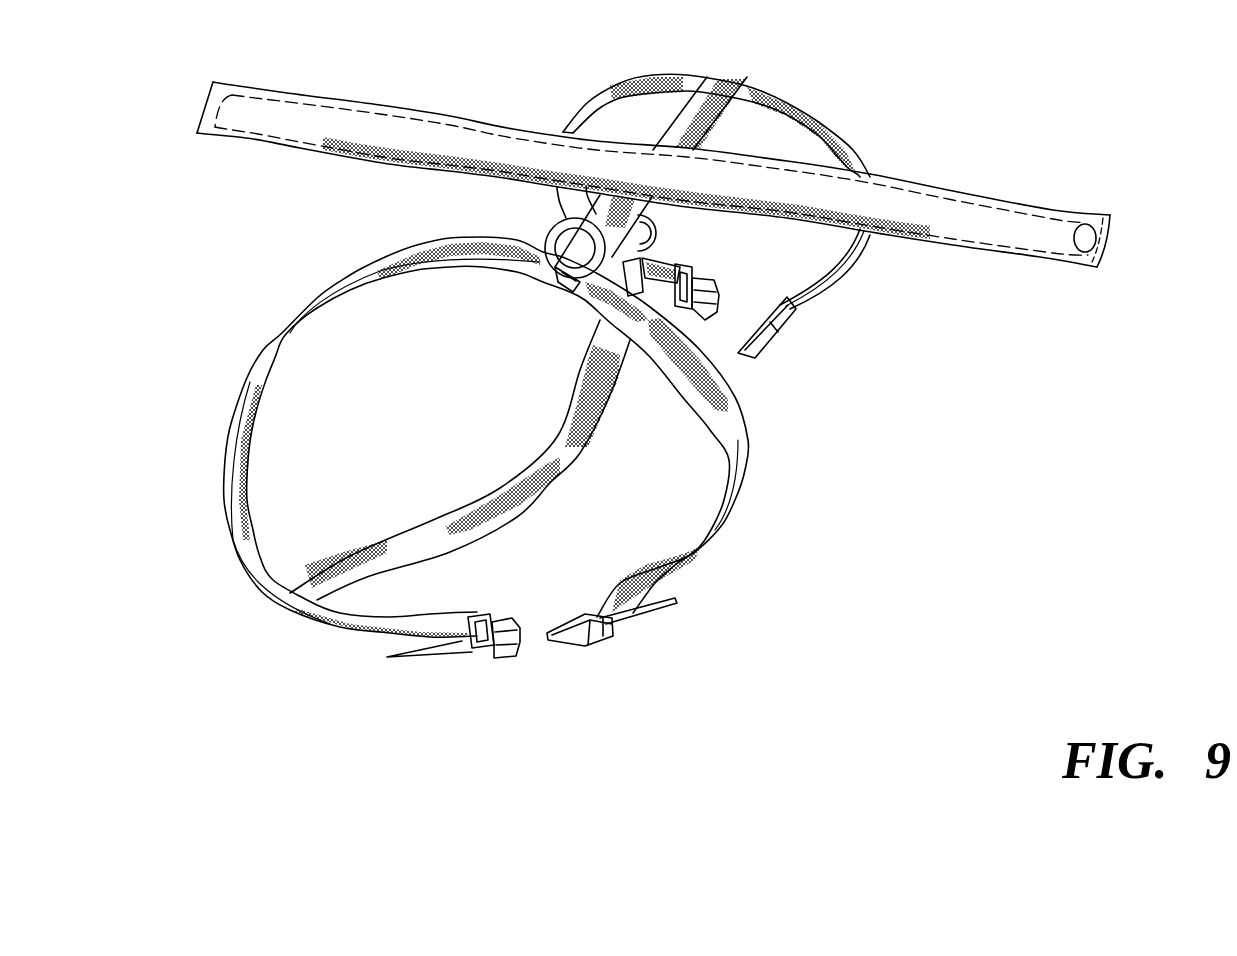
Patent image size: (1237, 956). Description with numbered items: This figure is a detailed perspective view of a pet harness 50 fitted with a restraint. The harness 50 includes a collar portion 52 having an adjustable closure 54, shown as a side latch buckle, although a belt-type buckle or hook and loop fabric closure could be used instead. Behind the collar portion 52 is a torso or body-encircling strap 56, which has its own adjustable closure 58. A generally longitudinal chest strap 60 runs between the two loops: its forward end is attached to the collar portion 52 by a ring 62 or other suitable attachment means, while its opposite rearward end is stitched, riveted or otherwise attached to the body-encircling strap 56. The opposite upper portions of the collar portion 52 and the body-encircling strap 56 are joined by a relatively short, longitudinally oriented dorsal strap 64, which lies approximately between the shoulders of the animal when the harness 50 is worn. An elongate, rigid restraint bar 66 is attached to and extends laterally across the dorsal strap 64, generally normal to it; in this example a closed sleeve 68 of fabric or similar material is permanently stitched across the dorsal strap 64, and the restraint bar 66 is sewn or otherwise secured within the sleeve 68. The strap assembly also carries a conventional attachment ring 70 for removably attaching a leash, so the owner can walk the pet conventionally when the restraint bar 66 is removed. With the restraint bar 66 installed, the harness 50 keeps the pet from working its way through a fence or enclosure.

The harness 50 is at (918, 591).
The collar portion 52 is at (827, 127).
The adjustable closure 54 is at (713, 323).
The body-encircling strap 56 is at (257, 381).
The adjustable closure 58 is at (617, 640).
The longitudinal chest strap 60 is at (450, 513).
The ring 62 is at (668, 228).
The dorsal strap 64 is at (557, 203).
The restraint bar 66 is at (1027, 213).
The closed sleeve 68 is at (1100, 213).
The attachment ring 70 is at (557, 265).